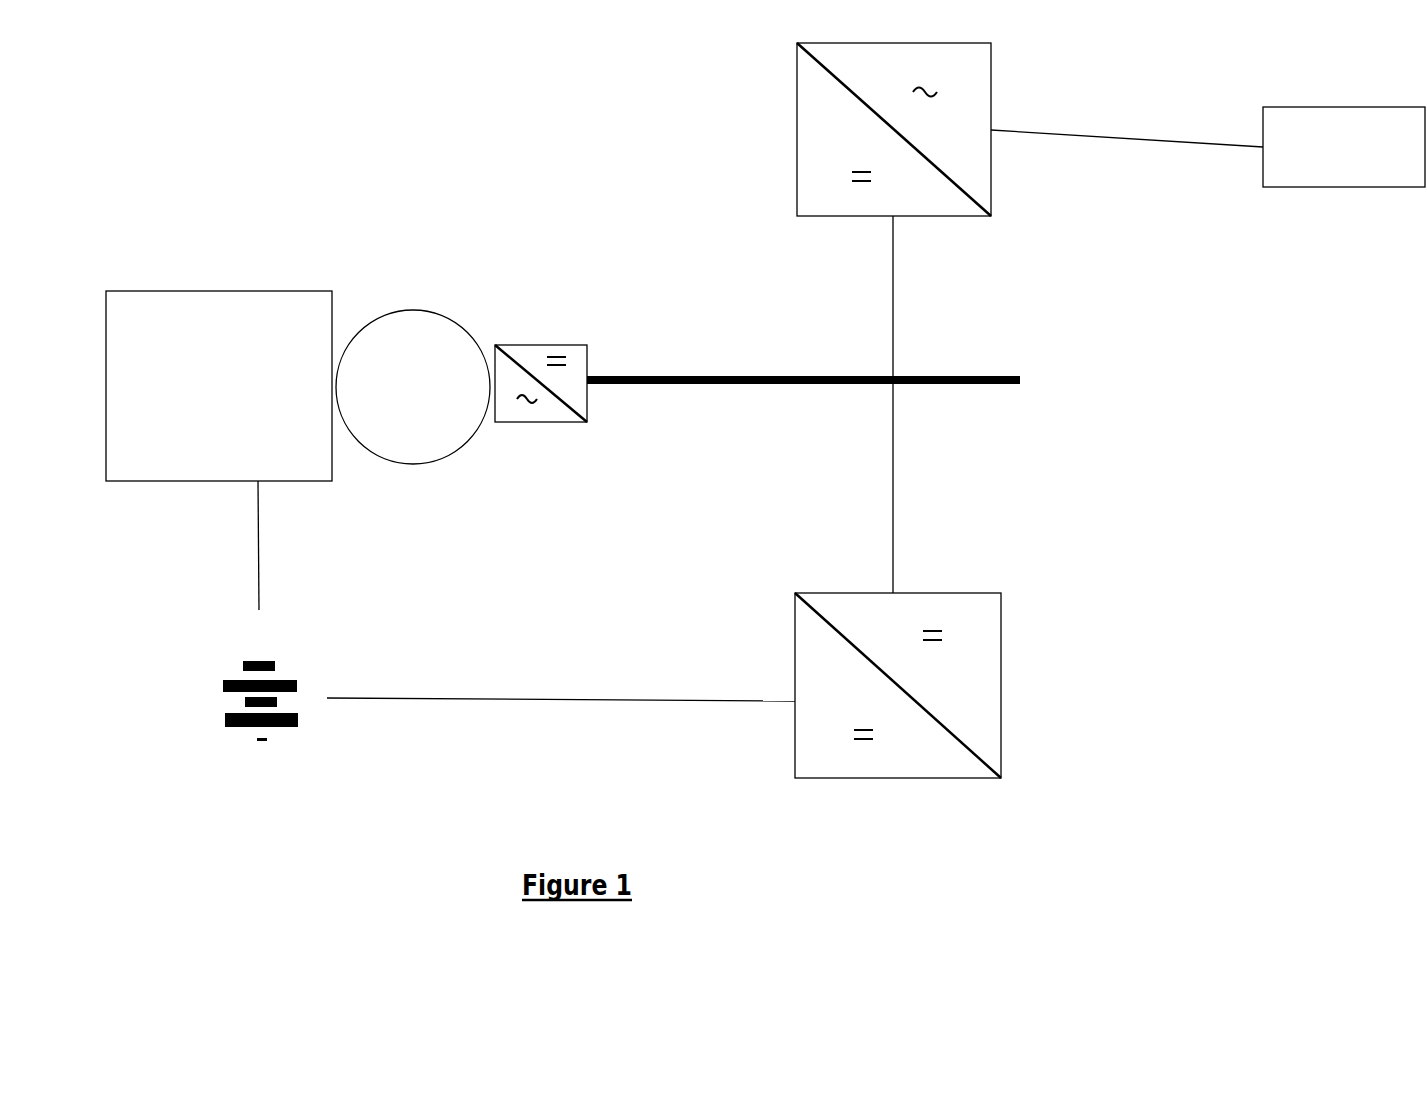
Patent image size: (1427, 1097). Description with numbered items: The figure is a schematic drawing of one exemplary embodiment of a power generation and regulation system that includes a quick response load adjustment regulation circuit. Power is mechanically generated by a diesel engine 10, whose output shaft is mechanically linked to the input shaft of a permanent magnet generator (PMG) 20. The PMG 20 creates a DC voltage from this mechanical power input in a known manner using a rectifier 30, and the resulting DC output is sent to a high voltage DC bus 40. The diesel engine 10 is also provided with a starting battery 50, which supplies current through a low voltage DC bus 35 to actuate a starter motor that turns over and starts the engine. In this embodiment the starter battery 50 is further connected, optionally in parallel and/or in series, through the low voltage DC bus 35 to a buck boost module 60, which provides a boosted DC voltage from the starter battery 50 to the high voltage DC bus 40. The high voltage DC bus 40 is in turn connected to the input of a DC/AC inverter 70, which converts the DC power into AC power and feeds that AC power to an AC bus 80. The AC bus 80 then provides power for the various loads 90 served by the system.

The diesel engine 10 is at (255, 288).
The permanent magnet generator 20 is at (418, 308).
The rectifier 30 is at (569, 423).
The low voltage DC bus 35 is at (251, 550).
The high voltage DC bus 40 is at (963, 386).
The starting battery 50 is at (219, 714).
The buck boost module 60 is at (1008, 710).
The DC/AC inverter 70 is at (996, 202).
The AC bus 80 is at (1123, 127).
The loads 90 is at (1346, 190).